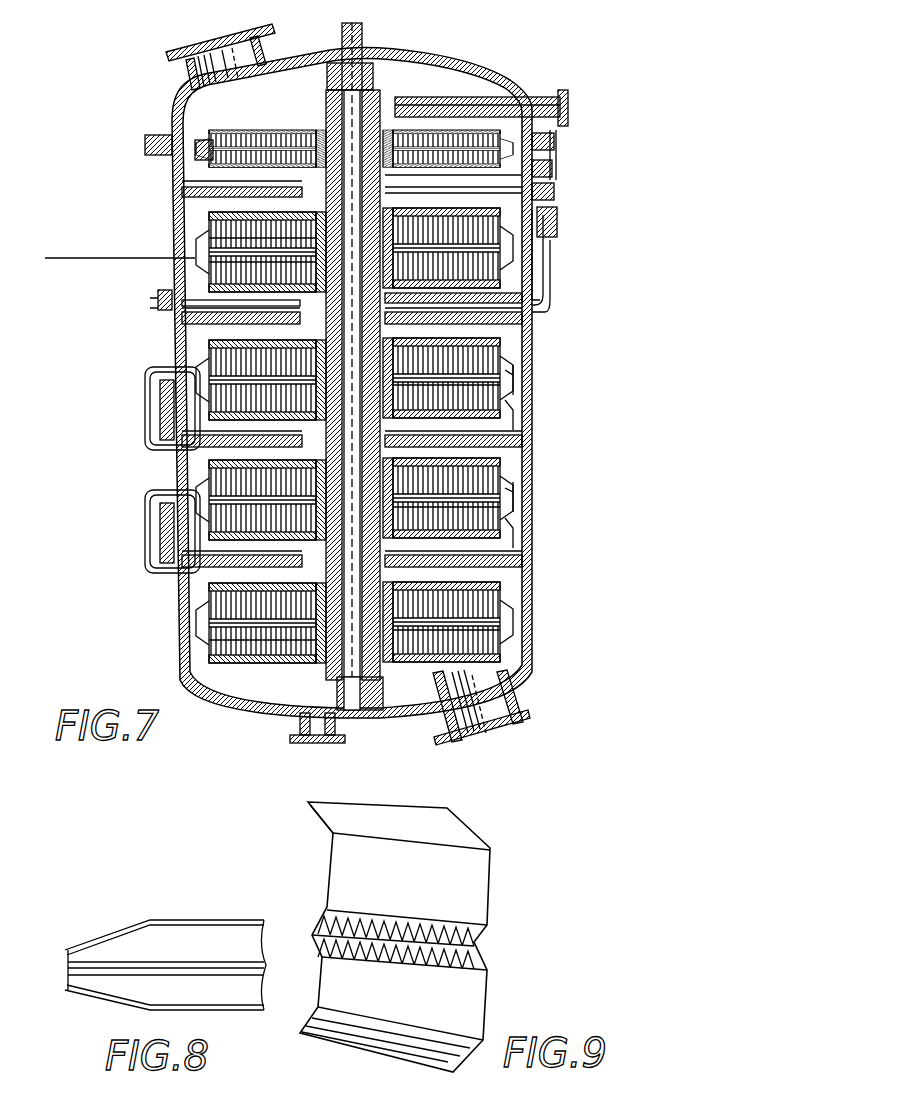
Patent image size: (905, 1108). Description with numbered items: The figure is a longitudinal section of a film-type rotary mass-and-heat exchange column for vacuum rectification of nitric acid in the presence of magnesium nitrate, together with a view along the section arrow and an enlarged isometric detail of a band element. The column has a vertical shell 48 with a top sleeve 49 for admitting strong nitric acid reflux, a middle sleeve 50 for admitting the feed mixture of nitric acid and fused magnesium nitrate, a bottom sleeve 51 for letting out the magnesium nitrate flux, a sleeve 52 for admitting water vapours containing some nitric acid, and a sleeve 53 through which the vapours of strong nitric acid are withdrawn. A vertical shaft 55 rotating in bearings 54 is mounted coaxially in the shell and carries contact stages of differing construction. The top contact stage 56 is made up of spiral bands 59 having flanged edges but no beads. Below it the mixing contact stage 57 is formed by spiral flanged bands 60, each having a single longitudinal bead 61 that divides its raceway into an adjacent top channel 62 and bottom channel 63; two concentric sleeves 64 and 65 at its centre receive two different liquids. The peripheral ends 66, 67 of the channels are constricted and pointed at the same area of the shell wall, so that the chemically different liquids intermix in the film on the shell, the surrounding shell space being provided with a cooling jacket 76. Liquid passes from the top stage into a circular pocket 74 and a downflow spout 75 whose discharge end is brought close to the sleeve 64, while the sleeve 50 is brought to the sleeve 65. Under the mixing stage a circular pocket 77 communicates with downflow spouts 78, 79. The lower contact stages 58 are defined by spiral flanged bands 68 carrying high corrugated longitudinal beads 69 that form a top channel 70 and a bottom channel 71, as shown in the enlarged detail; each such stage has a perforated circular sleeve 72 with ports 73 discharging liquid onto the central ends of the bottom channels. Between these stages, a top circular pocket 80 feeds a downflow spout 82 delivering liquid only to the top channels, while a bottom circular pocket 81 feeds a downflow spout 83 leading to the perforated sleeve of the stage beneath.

In FIG. 7, the vertical shell 48 is at (530, 665).
In FIG. 7, the top sleeve 49 is at (568, 95).
In FIG. 7, the middle sleeve 50 is at (555, 192).
In FIG. 7, the bottom sleeve 51 is at (292, 740).
In FIG. 7, the sleeve 52 is at (530, 716).
In FIG. 7, the sleeve 53 is at (168, 58).
In FIG. 7, the bearings 54 is at (374, 78).
In FIG. 7, the vertical shaft 55 is at (345, 672).
In FIG. 7, the top contact stage 56 is at (232, 130).
In FIG. 7, the mixing contact stage 57 is at (525, 318).
In FIG. 7, the contact stage 58 is at (205, 350).
In FIG. 7, the spiral bands 59 is at (203, 145).
In FIG. 7, the spiral flanged bands 60 is at (205, 225).
In FIG. 8, the spiral flanged bands 60 is at (170, 912).
In FIG. 7, the longitudinal bead 61 is at (195, 260).
In FIG. 7, the top channel 62 is at (205, 242).
In FIG. 8, the top channel 62 is at (218, 932).
In FIG. 7, the bottom channel 63 is at (205, 268).
In FIG. 8, the bottom channel 63 is at (258, 982).
In FIG. 7, the circular sleeve 64 is at (558, 222).
In FIG. 7, the circular sleeve 65 is at (395, 150).
In FIG. 7, the peripheral end 66 is at (560, 240).
In FIG. 8, the peripheral end 66 is at (88, 948).
In FIG. 7, the peripheral end 67 is at (556, 288).
In FIG. 8, the peripheral end 67 is at (96, 985).
In FIG. 7, the spiral flanged bands 68 is at (145, 405).
In FIG. 9, the spiral flanged bands 68 is at (500, 899).
In FIG. 7, the longitudinal bead 69 is at (520, 395).
In FIG. 9, the longitudinal bead 69 is at (478, 950).
In FIG. 7, the top channel 70 is at (300, 600).
In FIG. 9, the top channel 70 is at (478, 868).
In FIG. 7, the bottom channel 71 is at (230, 648).
In FIG. 9, the bottom channel 71 is at (480, 1012).
In FIG. 7, the perforated circular sleeve 72 is at (182, 320).
In FIG. 7, the ports 73 is at (294, 437).
In FIG. 7, the circular pocket 74 is at (172, 168).
In FIG. 7, the downflow spout 75 is at (200, 195).
In FIG. 7, the cooling jacket 76 is at (158, 300).
In FIG. 7, the circular pocket 77 is at (525, 302).
In FIG. 7, the downflow spout 78 is at (293, 318).
In FIG. 7, the downflow spout 79 is at (515, 355).
In FIG. 7, the top circular pocket 80 is at (515, 378).
In FIG. 7, the bottom circular pocket 81 is at (515, 420).
In FIG. 7, the downflow spout 82 is at (145, 490).
In FIG. 7, the downflow spout 83 is at (522, 458).